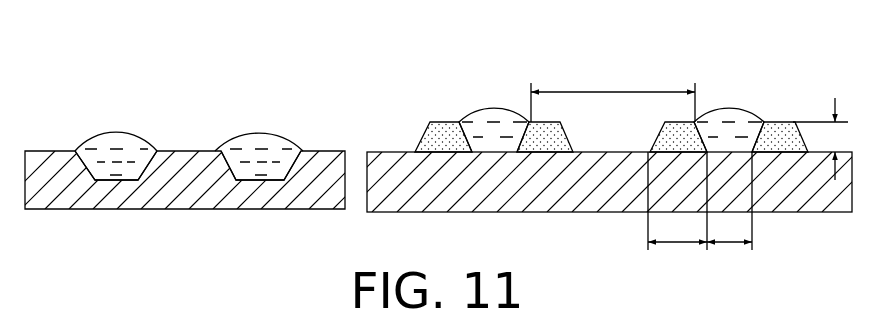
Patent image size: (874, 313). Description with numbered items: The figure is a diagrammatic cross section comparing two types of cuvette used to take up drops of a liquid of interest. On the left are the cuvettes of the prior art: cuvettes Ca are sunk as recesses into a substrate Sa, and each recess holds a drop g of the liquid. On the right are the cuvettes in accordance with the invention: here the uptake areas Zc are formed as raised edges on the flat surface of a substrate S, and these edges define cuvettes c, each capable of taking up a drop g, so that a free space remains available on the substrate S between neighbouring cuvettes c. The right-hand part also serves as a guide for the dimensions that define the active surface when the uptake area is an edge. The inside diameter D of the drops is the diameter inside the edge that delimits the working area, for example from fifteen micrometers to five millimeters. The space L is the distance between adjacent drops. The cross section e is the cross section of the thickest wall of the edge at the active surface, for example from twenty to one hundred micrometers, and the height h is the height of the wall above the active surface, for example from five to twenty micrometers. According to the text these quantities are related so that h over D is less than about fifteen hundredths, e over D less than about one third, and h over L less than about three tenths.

The substrate Sa is at (90, 198).
The sunk cuvette Ca is at (238, 157).
The drop g is at (253, 173).
The substrate S is at (558, 188).
The cuvette c is at (475, 133).
The uptake area Zc is at (430, 143).
The space between drops L is at (613, 93).
The wall cross section e is at (677, 201).
The inside diameter of the drops D is at (729, 201).
The height of the wall h is at (824, 139).